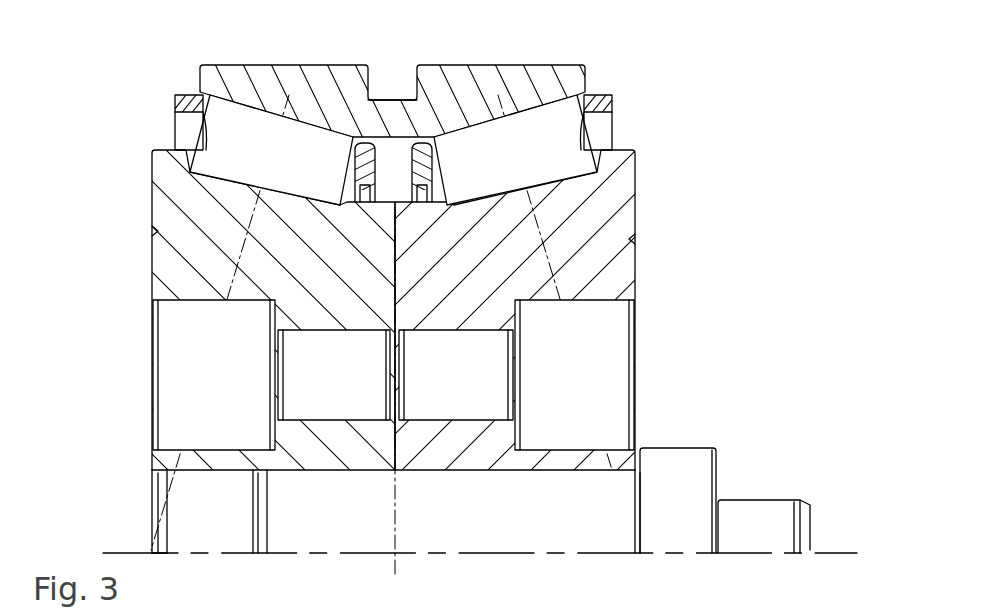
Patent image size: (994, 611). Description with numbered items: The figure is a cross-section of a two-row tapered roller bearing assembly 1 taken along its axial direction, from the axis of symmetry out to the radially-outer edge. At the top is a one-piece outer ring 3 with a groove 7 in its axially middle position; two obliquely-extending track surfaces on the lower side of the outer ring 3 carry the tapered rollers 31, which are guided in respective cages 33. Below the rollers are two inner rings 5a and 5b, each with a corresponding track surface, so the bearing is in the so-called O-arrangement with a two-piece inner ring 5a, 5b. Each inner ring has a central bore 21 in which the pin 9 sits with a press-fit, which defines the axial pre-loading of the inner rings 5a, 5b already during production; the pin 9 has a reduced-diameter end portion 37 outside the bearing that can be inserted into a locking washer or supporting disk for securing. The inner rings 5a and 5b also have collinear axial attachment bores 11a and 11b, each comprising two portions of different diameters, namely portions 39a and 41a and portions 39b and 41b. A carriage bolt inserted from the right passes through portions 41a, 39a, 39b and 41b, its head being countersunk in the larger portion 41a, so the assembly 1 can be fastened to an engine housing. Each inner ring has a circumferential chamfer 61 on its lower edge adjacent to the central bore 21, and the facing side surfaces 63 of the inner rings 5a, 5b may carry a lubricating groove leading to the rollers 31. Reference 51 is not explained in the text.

The tapered roller bearing assembly 1 is at (133, 85).
The outer ring 3 is at (268, 88).
The inner ring 5a is at (567, 217).
The inner ring 5b is at (167, 175).
The groove 7 is at (391, 70).
The pin 9 is at (690, 470).
The attachment bore 11a is at (660, 327).
The attachment bore 11b is at (137, 323).
The central bore 21 is at (183, 503).
The tapered rollers 31 is at (393, 150).
The cage 33 is at (190, 96).
The end portion 37 is at (760, 512).
The bore portion 39a is at (456, 375).
The bore portion 39b is at (334, 375).
The bore portion 41a is at (574, 375).
The bore portion 41b is at (214, 375).
The chamfer 51 is at (153, 231).
The chamfer 61 is at (480, 406).
The side surface 63 is at (396, 273).